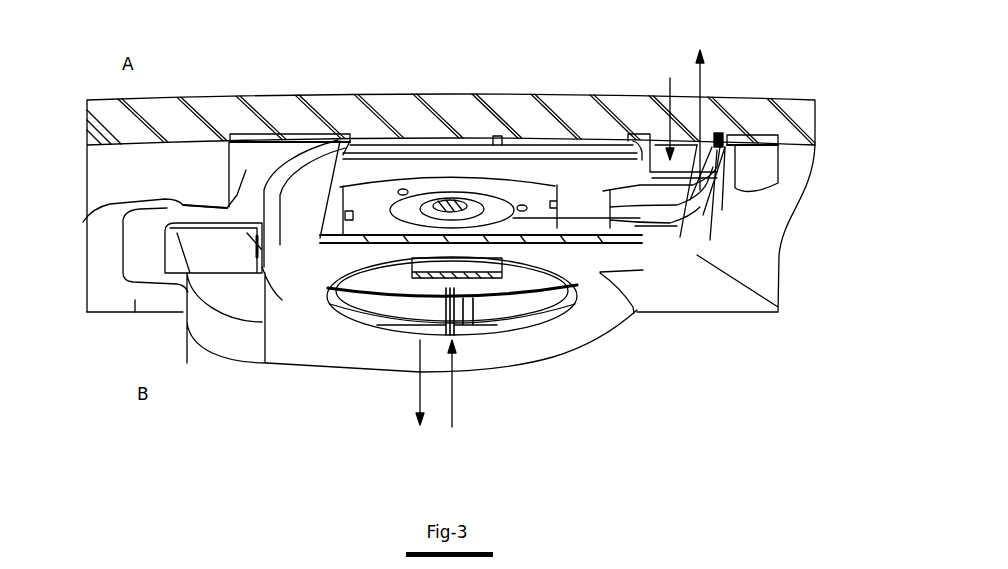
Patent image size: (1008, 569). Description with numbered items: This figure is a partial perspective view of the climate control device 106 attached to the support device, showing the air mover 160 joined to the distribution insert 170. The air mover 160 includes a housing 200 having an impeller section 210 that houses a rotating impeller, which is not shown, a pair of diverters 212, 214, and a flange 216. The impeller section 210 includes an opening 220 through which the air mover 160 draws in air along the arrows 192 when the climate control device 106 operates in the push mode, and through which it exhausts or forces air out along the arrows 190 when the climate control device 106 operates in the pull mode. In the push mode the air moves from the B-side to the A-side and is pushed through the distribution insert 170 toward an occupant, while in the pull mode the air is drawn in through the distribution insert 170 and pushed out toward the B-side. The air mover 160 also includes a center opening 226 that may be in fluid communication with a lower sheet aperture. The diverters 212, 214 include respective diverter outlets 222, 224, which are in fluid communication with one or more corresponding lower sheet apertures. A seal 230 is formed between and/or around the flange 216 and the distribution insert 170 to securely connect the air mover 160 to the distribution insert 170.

The climate control device 106 is at (340, 100).
The distribution insert 170 is at (167, 107).
The diverter outlet 224 is at (719, 133).
The diverter outlet 222 is at (102, 208).
The seal 230 is at (223, 233).
The flange 216 is at (143, 265).
The diverter 214 is at (778, 312).
The diverter 212 is at (230, 347).
The housing 200 is at (317, 347).
The center opening 226 is at (456, 195).
The impeller section 210 is at (554, 340).
The opening 220 is at (402, 314).
The air mover 160 is at (603, 315).
The arrows 190 is at (668, 85).
The arrows 192 is at (697, 75).